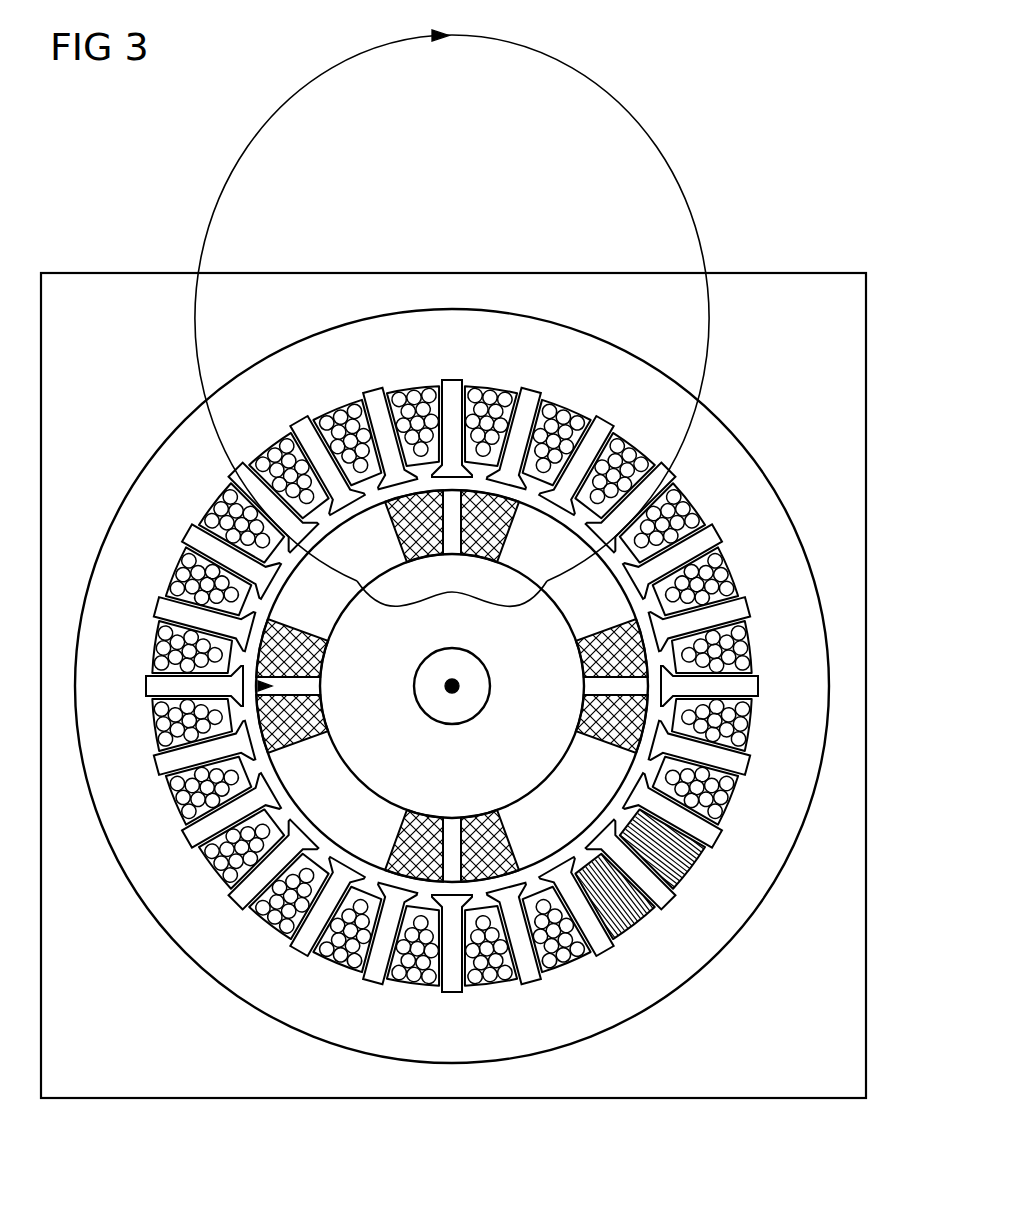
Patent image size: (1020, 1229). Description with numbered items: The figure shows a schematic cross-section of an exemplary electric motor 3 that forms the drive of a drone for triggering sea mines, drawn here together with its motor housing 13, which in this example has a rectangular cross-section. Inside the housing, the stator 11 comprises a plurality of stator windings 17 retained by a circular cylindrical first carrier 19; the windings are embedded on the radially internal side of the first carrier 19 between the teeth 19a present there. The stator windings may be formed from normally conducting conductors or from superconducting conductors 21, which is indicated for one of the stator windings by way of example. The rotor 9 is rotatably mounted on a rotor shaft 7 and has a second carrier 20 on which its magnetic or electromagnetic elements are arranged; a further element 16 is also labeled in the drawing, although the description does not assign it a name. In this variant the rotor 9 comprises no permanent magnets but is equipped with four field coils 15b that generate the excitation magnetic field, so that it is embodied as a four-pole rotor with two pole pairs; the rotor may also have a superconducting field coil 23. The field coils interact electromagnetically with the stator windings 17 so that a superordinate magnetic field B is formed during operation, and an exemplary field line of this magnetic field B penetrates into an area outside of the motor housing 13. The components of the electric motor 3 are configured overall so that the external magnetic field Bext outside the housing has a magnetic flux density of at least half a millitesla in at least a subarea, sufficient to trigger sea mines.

The electric motor 3 is at (115, 214).
The rotor shaft 7 is at (479, 686).
The rotor 9 is at (138, 692).
The stator 11 is at (202, 292).
The motor housing 13 is at (806, 272).
The field coil 15b is at (302, 930).
The rotor 16 is at (378, 770).
The stator winding 17 is at (705, 510).
The first carrier 19 is at (536, 686).
The tooth 19a is at (796, 634).
The second carrier 20 is at (452, 686).
The superconducting conductor 21 is at (721, 879).
The superconducting field coil 23 is at (323, 648).
The magnetic field B is at (398, 46).
The external magnetic field Bext is at (508, 46).